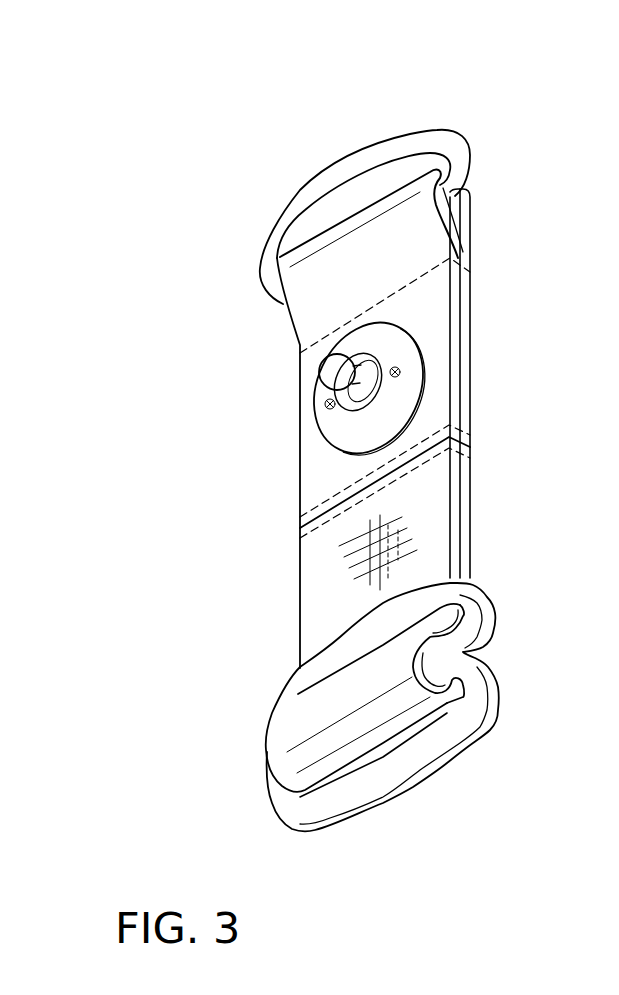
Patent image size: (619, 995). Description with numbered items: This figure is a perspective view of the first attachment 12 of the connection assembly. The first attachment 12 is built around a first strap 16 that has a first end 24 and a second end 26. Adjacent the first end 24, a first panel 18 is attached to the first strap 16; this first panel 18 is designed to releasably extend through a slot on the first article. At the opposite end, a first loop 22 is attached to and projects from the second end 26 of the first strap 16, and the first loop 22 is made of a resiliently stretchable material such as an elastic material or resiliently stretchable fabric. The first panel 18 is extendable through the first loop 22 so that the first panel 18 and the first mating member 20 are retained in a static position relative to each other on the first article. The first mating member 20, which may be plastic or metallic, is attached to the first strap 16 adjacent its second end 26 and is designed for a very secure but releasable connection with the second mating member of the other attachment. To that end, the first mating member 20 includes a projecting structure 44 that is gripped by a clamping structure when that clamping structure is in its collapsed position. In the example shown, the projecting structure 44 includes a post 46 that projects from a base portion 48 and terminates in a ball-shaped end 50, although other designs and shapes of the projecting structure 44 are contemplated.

The first attachment 12 is at (122, 179).
The first strap 16 is at (408, 503).
The first panel 18 is at (473, 605).
The first mating member 20 is at (395, 347).
The first loop 22 is at (457, 157).
The first end 24 is at (236, 650).
The second end 26 is at (226, 332).
The projecting structure 44 is at (312, 446).
The post 46 is at (359, 372).
The base portion 48 is at (388, 402).
The ball-shaped end 50 is at (327, 370).